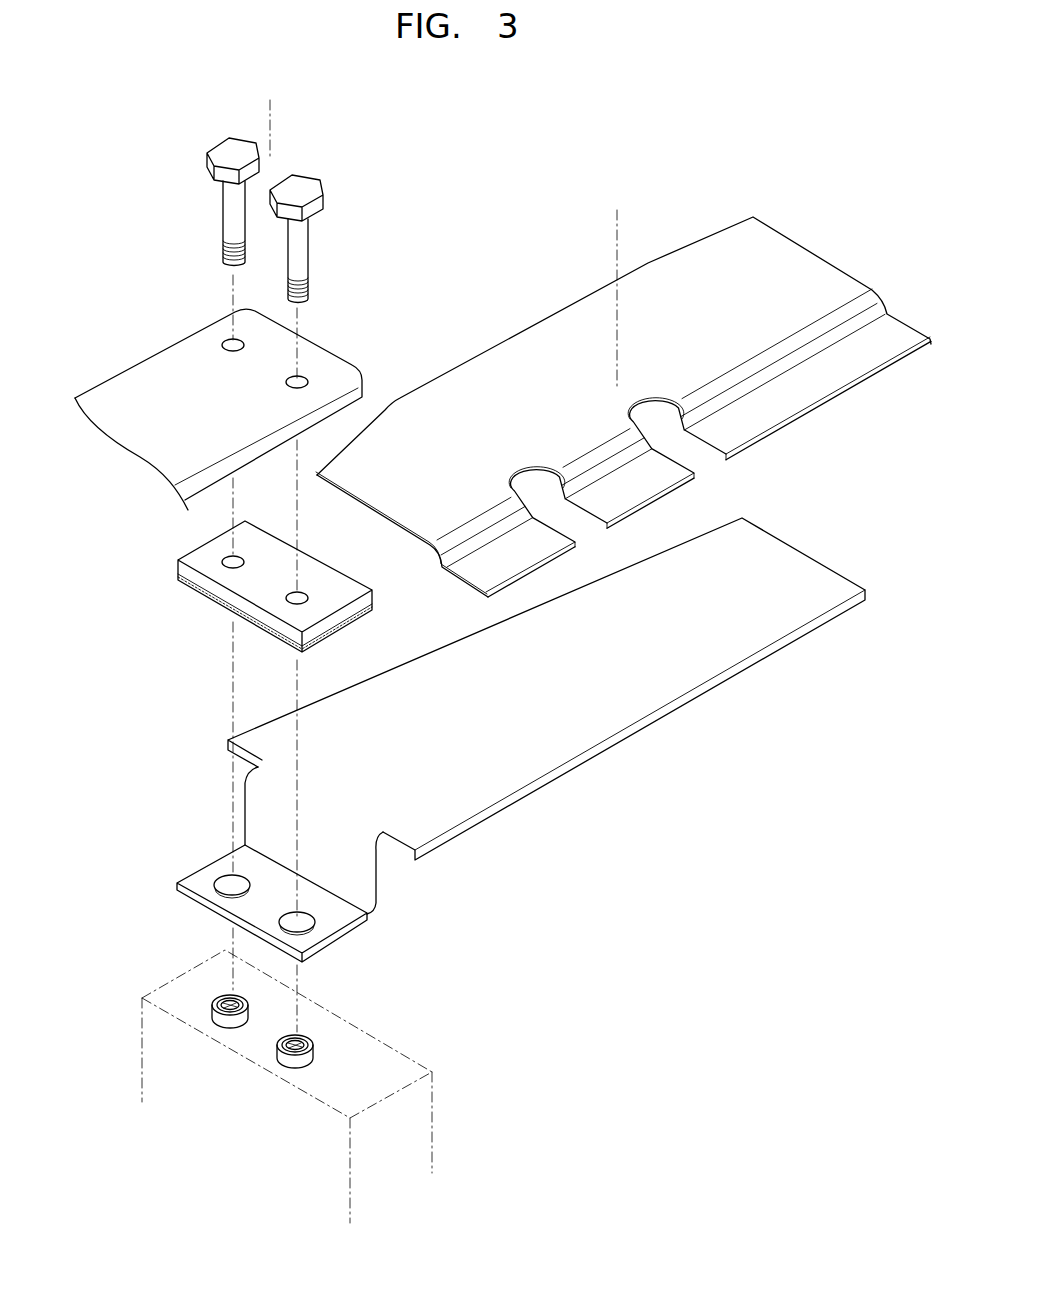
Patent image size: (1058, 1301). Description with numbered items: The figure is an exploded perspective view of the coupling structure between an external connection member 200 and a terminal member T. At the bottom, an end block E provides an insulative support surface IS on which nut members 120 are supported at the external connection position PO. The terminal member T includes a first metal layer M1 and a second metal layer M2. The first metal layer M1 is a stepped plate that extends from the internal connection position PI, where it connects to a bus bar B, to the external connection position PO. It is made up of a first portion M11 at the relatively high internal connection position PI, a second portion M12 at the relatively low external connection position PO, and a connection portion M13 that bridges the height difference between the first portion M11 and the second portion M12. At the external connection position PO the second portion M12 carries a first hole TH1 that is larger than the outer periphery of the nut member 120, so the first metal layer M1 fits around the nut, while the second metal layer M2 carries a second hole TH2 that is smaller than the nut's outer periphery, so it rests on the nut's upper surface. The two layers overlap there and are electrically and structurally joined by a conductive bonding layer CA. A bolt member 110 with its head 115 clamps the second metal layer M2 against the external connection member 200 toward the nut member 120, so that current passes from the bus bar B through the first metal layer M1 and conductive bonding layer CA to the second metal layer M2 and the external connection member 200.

The bolt member 110 is at (207, 143).
The head of the bolt member 115 is at (305, 187).
The nut member 120 is at (310, 1036).
The external connection member 200 is at (138, 372).
The external connection position PO is at (267, 118).
The internal connection position PI is at (616, 282).
The bus bar B is at (542, 346).
The second metal layer M2 is at (220, 568).
The second hole TH2 is at (227, 558).
The conductive bonding layer CA is at (197, 592).
The terminal member T is at (519, 745).
The first metal layer M1 is at (519, 745).
The first portion M11 is at (702, 693).
The second portion M12 is at (302, 894).
The connection portion M13 is at (377, 877).
The first hole TH1 is at (222, 880).
The insulative support surface IS is at (168, 995).
The end block E is at (255, 1079).